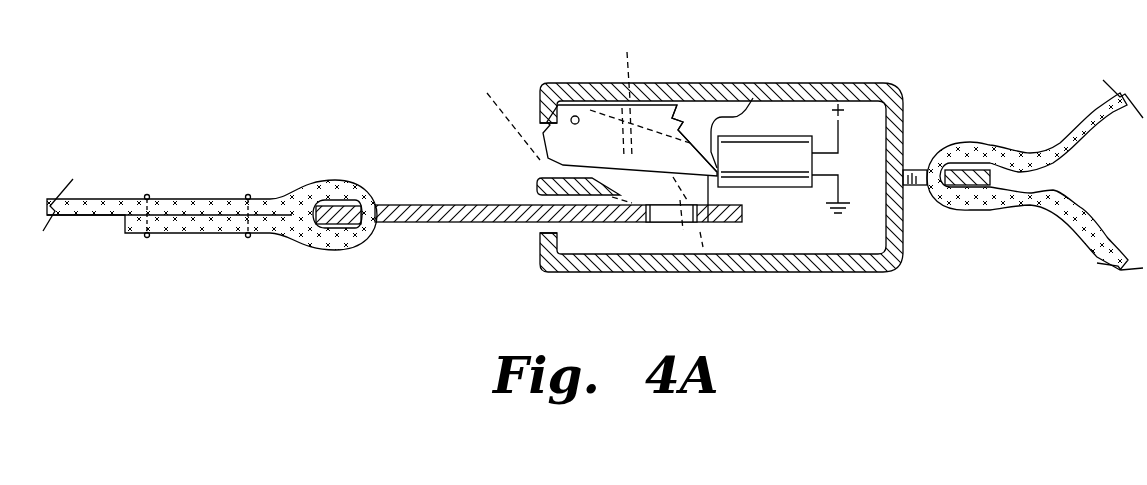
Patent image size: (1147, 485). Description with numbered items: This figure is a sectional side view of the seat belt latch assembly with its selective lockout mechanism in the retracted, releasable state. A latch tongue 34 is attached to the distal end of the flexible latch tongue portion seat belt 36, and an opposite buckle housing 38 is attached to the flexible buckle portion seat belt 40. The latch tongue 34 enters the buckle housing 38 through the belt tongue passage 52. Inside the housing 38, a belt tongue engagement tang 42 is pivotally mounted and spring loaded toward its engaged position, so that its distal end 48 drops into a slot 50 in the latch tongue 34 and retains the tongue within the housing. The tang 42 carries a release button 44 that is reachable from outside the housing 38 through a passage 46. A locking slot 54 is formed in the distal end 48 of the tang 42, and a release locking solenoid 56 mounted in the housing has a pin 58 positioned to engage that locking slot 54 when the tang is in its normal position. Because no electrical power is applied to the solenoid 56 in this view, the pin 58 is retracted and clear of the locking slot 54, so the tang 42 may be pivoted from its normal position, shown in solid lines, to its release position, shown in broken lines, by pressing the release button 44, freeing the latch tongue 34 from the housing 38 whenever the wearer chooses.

The latch tongue 34 is at (458, 205).
The latch tongue portion seat belt 36 is at (220, 198).
The buckle housing 38 is at (763, 273).
The buckle portion seat belt 40 is at (1068, 130).
The belt tongue engagement tang 42 is at (643, 107).
The release button 44 is at (540, 132).
The passage 46 is at (546, 168).
The distal end 48 is at (708, 222).
The slot 50 is at (655, 222).
The belt tongue passage 52 is at (537, 233).
The locking slot 54 is at (693, 107).
The release locking solenoid 56 is at (787, 188).
The pin 58 is at (753, 98).